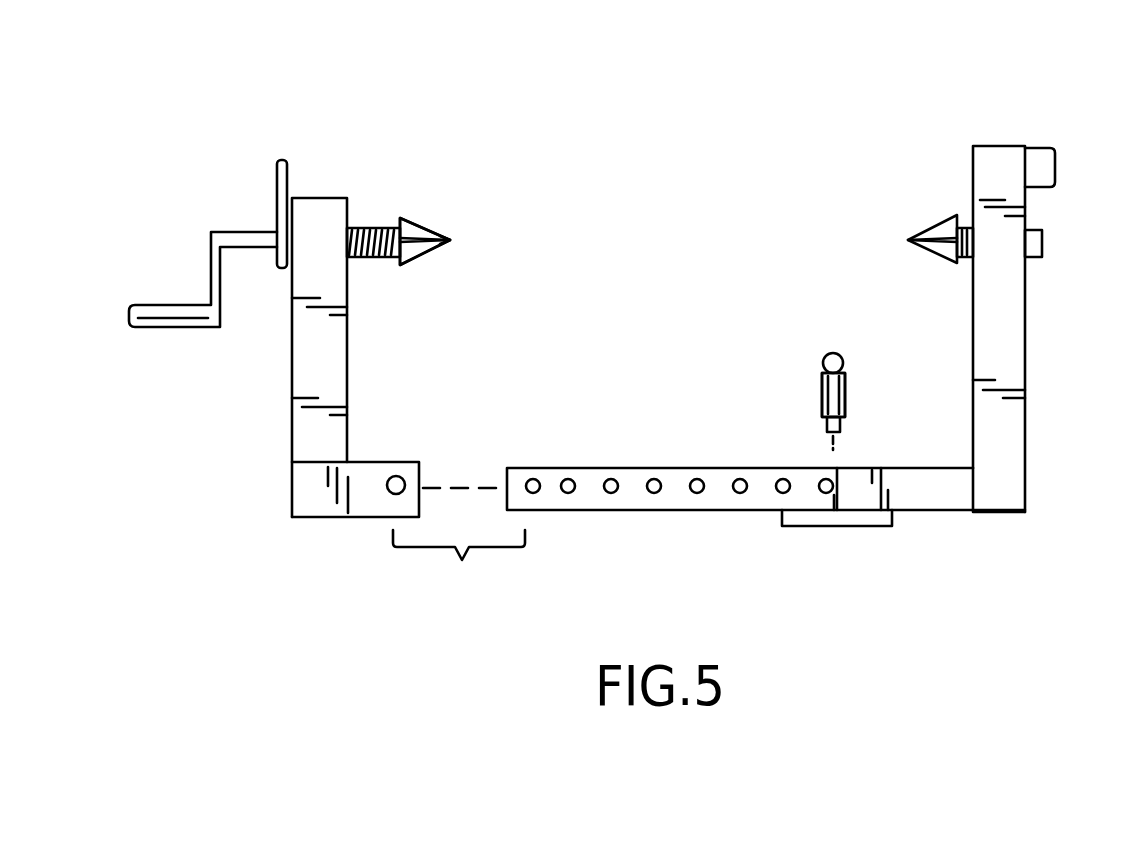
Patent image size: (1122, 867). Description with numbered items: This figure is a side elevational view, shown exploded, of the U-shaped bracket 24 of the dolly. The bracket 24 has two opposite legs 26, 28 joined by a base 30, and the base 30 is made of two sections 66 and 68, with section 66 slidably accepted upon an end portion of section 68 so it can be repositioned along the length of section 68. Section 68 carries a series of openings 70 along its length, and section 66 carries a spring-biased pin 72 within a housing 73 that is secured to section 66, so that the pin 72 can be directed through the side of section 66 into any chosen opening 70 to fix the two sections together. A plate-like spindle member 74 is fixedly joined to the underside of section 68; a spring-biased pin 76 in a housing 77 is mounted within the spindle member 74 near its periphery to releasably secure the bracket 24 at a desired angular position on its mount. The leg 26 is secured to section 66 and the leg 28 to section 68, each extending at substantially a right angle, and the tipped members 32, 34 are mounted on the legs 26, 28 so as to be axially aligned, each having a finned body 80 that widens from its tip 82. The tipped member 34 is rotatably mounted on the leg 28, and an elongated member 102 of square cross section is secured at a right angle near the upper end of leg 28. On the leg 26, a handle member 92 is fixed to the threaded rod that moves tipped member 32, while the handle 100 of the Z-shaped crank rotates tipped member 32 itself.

The U-shaped bracket 24 is at (459, 571).
The leg 26 is at (306, 371).
The leg 28 is at (1005, 365).
The base 30 is at (952, 515).
The tipped member 32 is at (420, 222).
The tipped member 34 is at (950, 215).
The base section 66 is at (325, 518).
The base section 68 is at (670, 511).
The openings 70 is at (783, 478).
The spring-biased pin 72 is at (402, 477).
The housing 73 is at (390, 476).
The spindle member 74 is at (848, 528).
The spring-biased pin 76 is at (825, 355).
The housing 77 is at (846, 400).
The finned body 80 is at (418, 266).
The tip 82 is at (452, 240).
The handle member 92 is at (278, 195).
The handle 100 is at (186, 330).
The elongated member 102 is at (1053, 165).